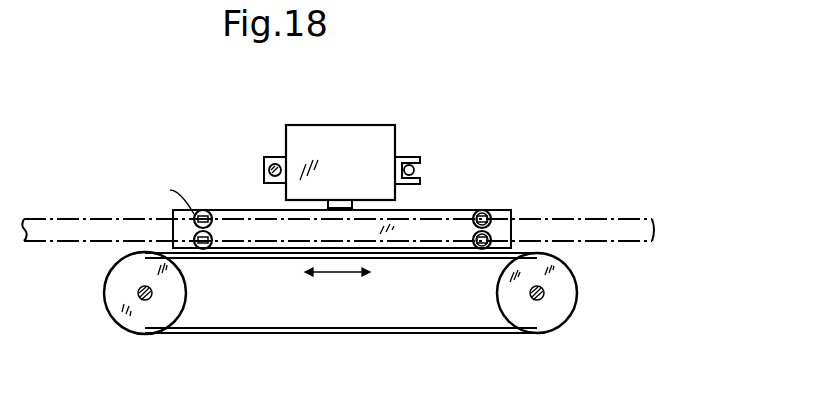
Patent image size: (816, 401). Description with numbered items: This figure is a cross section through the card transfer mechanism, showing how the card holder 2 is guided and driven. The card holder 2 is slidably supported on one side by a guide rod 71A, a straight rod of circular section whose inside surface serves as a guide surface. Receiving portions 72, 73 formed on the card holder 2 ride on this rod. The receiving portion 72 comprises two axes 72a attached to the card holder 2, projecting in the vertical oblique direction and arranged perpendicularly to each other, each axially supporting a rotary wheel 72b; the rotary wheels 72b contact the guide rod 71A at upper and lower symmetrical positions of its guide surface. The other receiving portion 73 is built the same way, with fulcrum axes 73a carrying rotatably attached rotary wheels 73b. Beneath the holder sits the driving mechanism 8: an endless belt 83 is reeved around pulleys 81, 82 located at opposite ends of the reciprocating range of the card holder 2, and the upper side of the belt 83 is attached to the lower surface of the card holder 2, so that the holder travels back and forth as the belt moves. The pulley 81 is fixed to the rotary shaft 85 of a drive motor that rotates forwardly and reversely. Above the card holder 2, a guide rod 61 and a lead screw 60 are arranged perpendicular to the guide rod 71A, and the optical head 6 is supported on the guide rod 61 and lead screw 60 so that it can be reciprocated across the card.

The card holder 2 is at (420, 213).
The optical head 6 is at (340, 125).
The lead screw 60 is at (270, 158).
The guide rod 61 is at (410, 158).
The driving mechanism 8 is at (457, 336).
The guide rod 71A is at (617, 221).
The receiving portion 72 is at (214, 215).
The axis 72a is at (203, 210).
The rotary wheel 72b is at (158, 195).
The receiving portion 73 is at (513, 212).
The axis 73a is at (481, 210).
The rotary wheel 73b is at (490, 212).
The pulley 81 is at (550, 322).
The pulley 82 is at (155, 318).
The endless belt 83 is at (387, 335).
The rotary shaft 85 is at (545, 293).